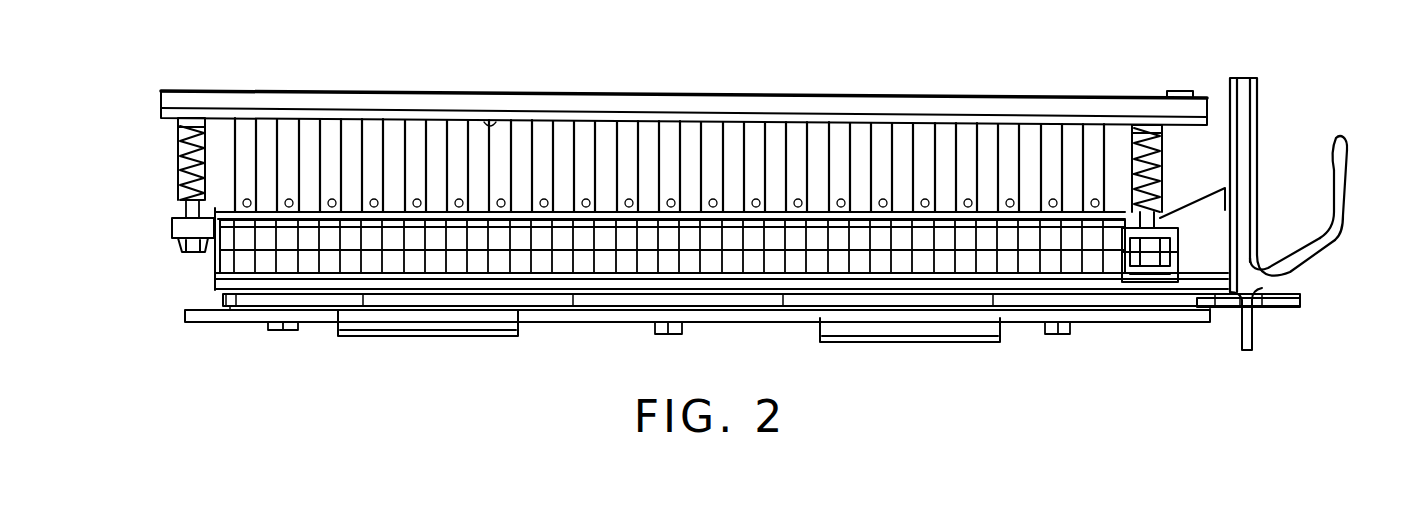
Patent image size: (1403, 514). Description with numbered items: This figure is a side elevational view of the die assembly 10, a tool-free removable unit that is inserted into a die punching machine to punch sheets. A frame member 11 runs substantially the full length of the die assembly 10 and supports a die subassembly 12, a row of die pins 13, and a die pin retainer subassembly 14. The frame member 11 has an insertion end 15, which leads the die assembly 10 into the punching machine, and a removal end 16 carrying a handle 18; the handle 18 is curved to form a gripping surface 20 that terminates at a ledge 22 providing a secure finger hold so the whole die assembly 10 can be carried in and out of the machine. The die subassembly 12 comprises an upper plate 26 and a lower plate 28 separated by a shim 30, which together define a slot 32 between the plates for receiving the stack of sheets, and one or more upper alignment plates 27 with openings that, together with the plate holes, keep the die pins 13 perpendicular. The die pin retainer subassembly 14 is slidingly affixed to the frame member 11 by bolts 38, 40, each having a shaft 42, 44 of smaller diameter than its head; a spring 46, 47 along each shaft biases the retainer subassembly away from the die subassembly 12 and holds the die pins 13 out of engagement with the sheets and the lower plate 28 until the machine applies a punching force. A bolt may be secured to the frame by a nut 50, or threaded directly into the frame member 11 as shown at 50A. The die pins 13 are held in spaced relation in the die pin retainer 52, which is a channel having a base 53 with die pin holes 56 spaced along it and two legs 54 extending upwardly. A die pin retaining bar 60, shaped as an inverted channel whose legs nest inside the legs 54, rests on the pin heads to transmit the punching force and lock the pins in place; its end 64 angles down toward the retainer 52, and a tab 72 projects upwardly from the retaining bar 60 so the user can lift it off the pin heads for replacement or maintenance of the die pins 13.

The die assembly 10 is at (982, 75).
The frame member 11 is at (1228, 285).
The die subassembly 12 is at (188, 295).
The die pins 13 is at (252, 135).
The die pin retainer subassembly 14 is at (660, 97).
The insertion end 15 is at (151, 80).
The removal end 16 is at (1197, 80).
The handle 18 is at (1338, 234).
The gripping surface 20 is at (1334, 194).
The ledge 22 is at (1333, 138).
The upper plate 26 is at (212, 286).
The upper alignment plate 27 is at (270, 168).
The lower plate 28 is at (214, 297).
The shim 30 is at (240, 296).
The slot 32 is at (188, 322).
The bolt 38 is at (1163, 150).
The bolt 40 is at (176, 140).
The shaft 42 is at (1162, 168).
The shaft 44 is at (178, 168).
The spring 46 is at (1160, 196).
The spring 47 is at (178, 190).
The nut 50 is at (170, 240).
The bolt fixedly threaded into frame member 50A is at (1168, 234).
The die pin retainer 52 is at (404, 116).
The base 53 is at (846, 134).
The legs 54 is at (344, 110).
The die pin holes 56 is at (486, 124).
The die pin retaining bar 60 is at (178, 78).
The end of retaining bar 64 is at (1126, 86).
The tab 72 is at (1182, 88).